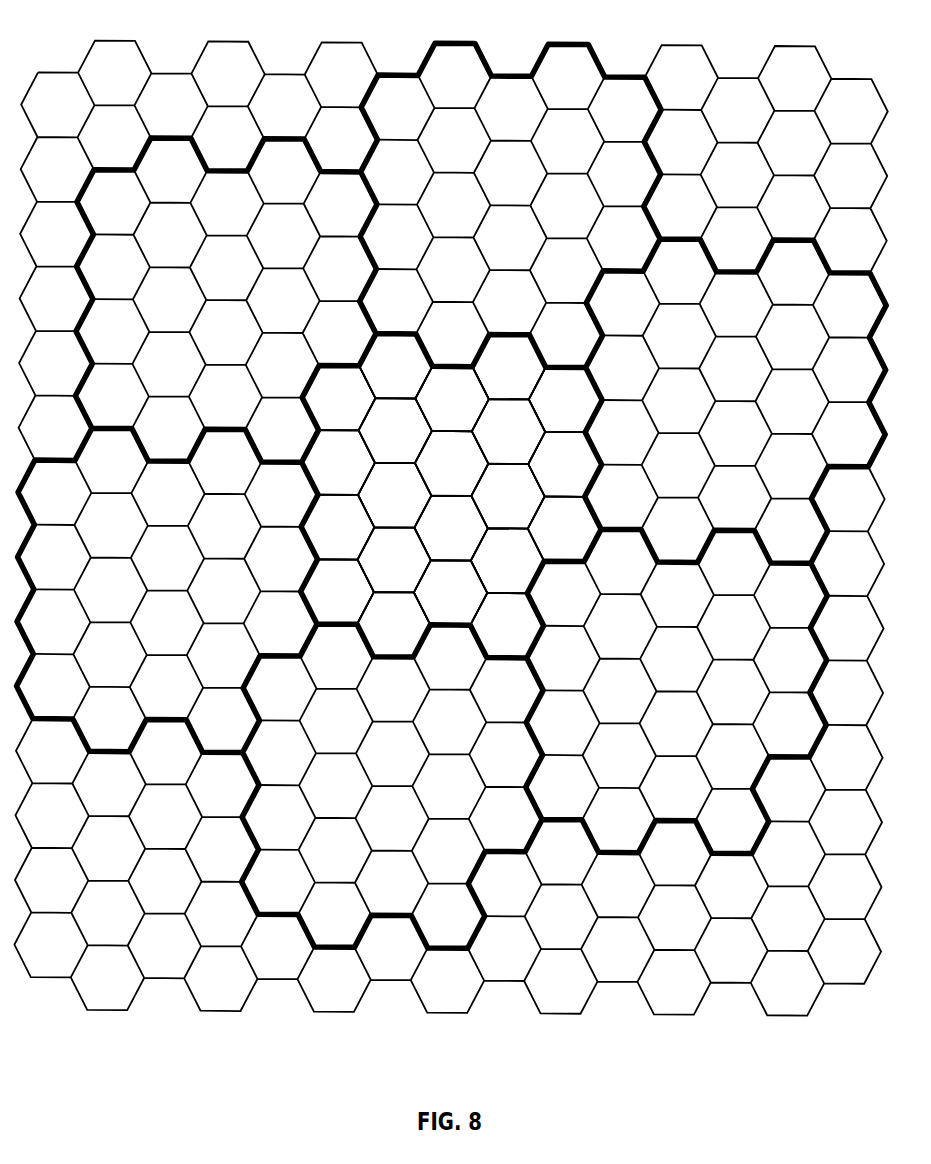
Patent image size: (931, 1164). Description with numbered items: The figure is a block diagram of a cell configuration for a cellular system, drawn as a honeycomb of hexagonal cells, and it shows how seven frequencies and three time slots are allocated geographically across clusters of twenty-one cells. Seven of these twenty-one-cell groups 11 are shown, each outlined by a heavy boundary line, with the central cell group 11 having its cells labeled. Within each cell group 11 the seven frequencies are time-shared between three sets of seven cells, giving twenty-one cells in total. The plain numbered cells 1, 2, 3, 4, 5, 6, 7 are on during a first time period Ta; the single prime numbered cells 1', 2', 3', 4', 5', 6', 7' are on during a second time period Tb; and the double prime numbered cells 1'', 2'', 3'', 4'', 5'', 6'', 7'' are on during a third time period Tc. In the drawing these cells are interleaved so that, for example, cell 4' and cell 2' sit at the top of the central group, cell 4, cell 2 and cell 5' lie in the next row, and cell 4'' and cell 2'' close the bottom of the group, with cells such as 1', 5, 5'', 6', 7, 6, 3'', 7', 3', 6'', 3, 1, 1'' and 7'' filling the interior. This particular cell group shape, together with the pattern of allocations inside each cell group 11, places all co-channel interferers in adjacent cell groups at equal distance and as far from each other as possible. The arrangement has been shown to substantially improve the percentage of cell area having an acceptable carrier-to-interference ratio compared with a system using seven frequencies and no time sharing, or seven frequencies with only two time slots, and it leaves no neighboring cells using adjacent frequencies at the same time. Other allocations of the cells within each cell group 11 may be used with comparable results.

The 21-cell group 11 is at (487, 63).
The plain numbered cell 1 is at (508, 560).
The plain numbered cell 2 is at (452, 398).
The plain numbered cell 3 is at (394, 559).
The plain numbered cell 4 is at (339, 397).
The plain numbered cell 5 is at (509, 431).
The plain numbered cell 6 is at (395, 495).
The plain numbered cell 7 is at (565, 464).
The single prime numbered cell 1' is at (395, 430).
The single prime numbered cell 2' is at (509, 366).
The single prime numbered cell 3' is at (451, 527).
The single prime numbered cell 4' is at (396, 365).
The single prime numbered cell 5' is at (566, 399).
The single prime numbered cell 6' is at (452, 463).
The single prime numbered cell 7' is at (338, 527).
The double prime numbered cell 1'' is at (337, 591).
The double prime numbered cell 2'' is at (507, 625).
The double prime numbered cell 3'' is at (508, 496).
The double prime numbered cell 4'' is at (394, 624).
The double prime numbered cell 5'' is at (338, 462).
The double prime numbered cell 6'' is at (565, 528).
The double prime numbered cell 7'' is at (451, 592).